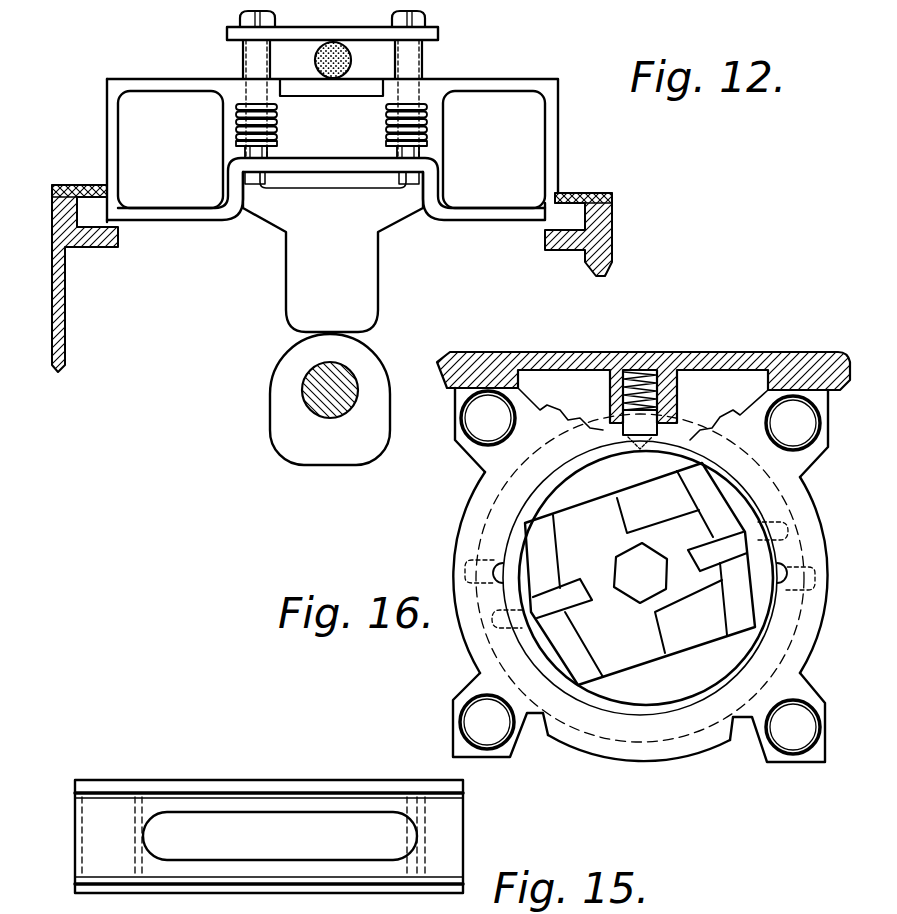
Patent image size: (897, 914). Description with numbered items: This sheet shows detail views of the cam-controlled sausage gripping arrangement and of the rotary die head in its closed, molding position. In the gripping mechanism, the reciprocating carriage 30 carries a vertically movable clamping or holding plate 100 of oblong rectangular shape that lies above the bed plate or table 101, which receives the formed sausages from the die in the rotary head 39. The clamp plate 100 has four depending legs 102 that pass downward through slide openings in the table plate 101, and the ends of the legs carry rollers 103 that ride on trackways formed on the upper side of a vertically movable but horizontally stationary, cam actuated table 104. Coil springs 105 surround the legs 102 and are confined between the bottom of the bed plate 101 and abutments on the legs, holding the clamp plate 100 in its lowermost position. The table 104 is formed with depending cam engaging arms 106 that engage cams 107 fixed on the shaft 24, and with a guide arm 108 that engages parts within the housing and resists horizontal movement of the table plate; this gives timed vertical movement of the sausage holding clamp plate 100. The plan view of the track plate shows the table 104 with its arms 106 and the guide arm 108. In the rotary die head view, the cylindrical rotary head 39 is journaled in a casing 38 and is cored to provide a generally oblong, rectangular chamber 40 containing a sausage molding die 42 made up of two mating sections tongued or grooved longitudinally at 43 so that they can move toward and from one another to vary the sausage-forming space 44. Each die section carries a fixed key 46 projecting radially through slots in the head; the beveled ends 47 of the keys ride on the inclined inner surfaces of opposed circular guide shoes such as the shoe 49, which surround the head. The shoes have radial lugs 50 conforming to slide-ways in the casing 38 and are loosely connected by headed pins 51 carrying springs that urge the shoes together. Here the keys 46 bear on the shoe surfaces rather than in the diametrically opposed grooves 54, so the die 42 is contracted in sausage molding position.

In FIG. 12, the clamping plate 100 is at (440, 34).
In FIG. 12, the bed plate 101 is at (372, 84).
In FIG. 12, the depending legs 102 is at (242, 58).
In FIG. 12, the rollers 103 is at (240, 176).
In FIG. 12, the cam actuated table 104 is at (250, 206).
In FIG. 15, the cam actuated table 104 is at (240, 782).
In FIG. 12, the coil springs 105 is at (235, 129).
In FIG. 12, the cam engaging arms 106 is at (375, 288).
In FIG. 15, the cam engaging arms 106 is at (173, 773).
In FIG. 12, the cams 107 is at (276, 418).
In FIG. 12, the shaft 24 is at (306, 368).
In FIG. 12, the carriage 30 is at (560, 141).
In FIG. 16, the casing 38 is at (600, 347).
In FIG. 16, the rotary head 39 is at (540, 490).
In FIG. 16, the chamber 40 is at (634, 720).
In FIG. 16, the sausage molding die 42 is at (637, 660).
In FIG. 16, the tongue and groove 43 is at (669, 571).
In FIG. 16, the sausage-forming space 44 is at (632, 600).
In FIG. 16, the key 46 is at (571, 583).
In FIG. 16, the beveled ends 47 is at (478, 652).
In FIG. 16, the guide shoe 49 is at (463, 507).
In FIG. 16, the radial lugs 50 is at (502, 428).
In FIG. 16, the headed pins 51 is at (782, 414).
In FIG. 16, the seats or grooves 54 is at (478, 552).
In FIG. 15, the guide arm 108 is at (68, 802).